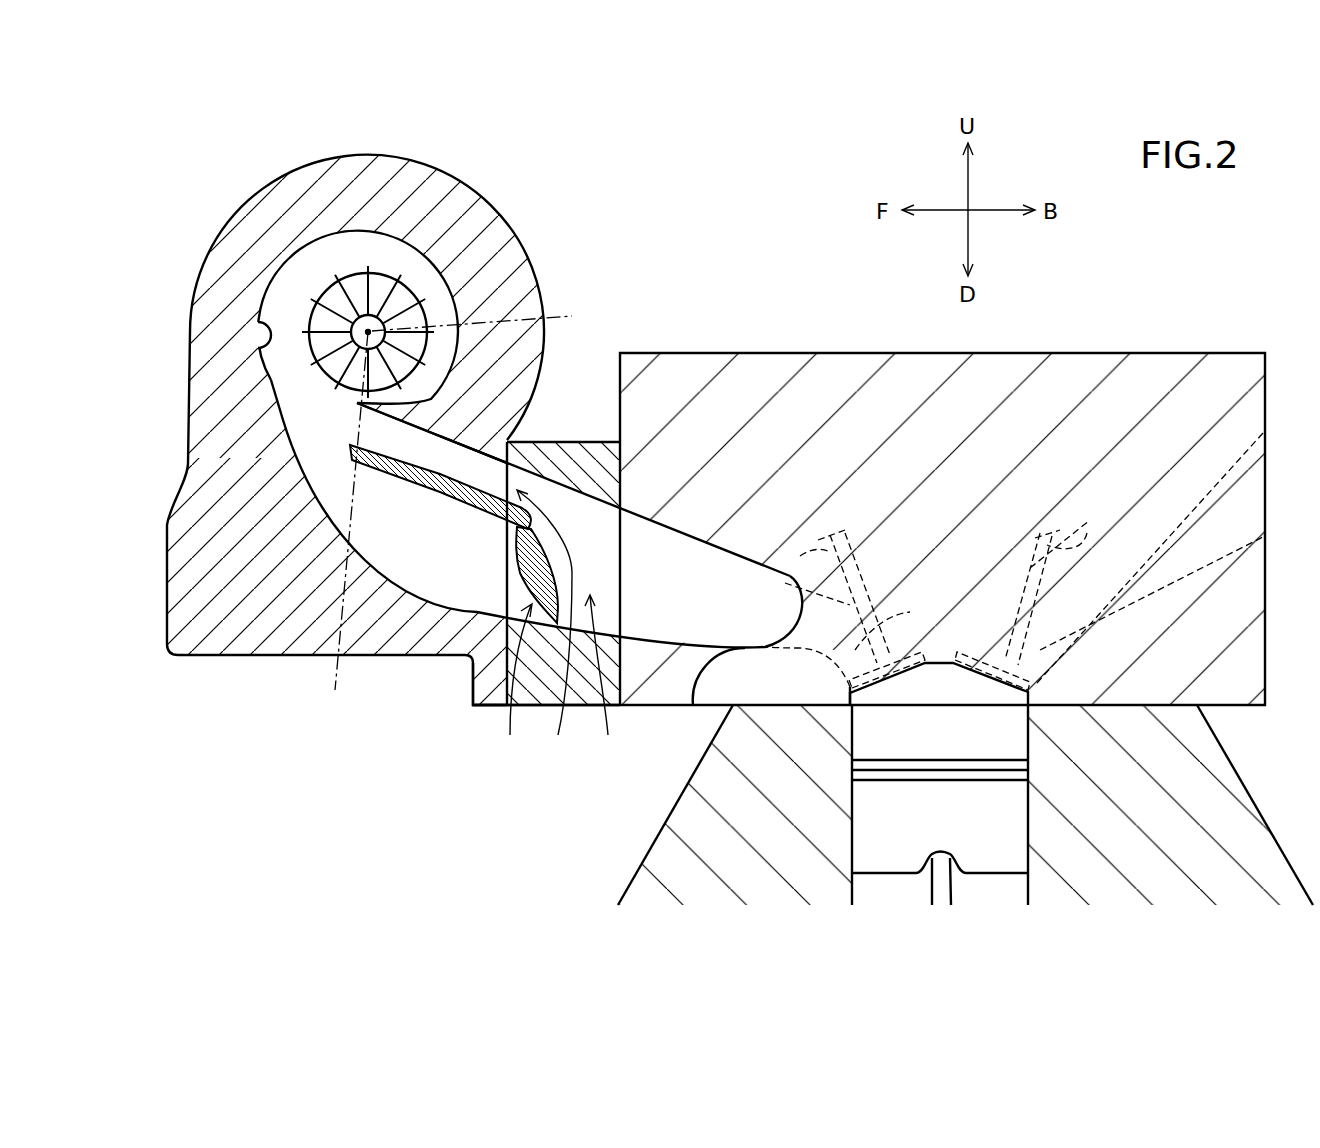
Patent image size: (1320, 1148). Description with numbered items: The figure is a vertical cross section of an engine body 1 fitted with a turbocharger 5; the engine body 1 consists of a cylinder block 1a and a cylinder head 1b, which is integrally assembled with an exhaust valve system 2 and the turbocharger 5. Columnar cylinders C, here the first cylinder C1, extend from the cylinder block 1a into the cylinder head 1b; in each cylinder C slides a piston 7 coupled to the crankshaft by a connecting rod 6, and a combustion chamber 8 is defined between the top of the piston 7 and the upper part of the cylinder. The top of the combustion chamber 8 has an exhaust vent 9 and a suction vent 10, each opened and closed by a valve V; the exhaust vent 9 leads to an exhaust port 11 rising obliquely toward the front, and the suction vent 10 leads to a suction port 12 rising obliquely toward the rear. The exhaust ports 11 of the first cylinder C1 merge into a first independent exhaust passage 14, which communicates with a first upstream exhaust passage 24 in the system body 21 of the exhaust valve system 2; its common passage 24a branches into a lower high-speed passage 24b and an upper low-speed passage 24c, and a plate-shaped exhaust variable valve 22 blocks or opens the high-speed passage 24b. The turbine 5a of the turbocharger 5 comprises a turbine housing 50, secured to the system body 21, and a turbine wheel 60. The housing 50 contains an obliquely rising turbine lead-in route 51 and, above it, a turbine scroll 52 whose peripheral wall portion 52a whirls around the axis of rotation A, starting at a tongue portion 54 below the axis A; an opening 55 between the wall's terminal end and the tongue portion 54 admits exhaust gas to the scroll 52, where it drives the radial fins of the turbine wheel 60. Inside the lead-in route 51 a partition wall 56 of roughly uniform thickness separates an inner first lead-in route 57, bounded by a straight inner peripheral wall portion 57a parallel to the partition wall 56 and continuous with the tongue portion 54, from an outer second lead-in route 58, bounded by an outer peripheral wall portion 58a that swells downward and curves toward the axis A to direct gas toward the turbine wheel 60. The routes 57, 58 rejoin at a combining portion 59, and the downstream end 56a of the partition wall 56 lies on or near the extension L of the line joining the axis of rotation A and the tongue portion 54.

The engine body 1 is at (1229, 278).
The cylinder block 1a is at (1226, 750).
The cylinder head 1b is at (1102, 353).
The exhaust valve system 2 is at (600, 429).
The turbocharger 5 is at (449, 433).
The turbine 5a is at (230, 161).
The connecting rod 6 is at (932, 893).
The piston 7 is at (862, 830).
The combustion chamber 8 is at (946, 739).
The exhaust vent 9 is at (893, 640).
The suction vent 10 is at (990, 645).
The exhaust port 11 is at (822, 640).
The suction port 12 is at (1110, 588).
The first independent exhaust passage 14 is at (730, 614).
The system body 21 is at (567, 440).
The exhaust variable valve 22 is at (518, 562).
The first upstream exhaust passage 24 is at (557, 646).
The common passage 24a is at (612, 680).
The high-speed passage 24b is at (505, 685).
The low-speed passage 24c is at (549, 628).
The turbine housing 50 is at (243, 656).
The turbine lead-in route 51 is at (468, 714).
The turbine scroll 52 is at (277, 292).
The peripheral wall portion 52a is at (260, 330).
The tongue portion 54 is at (356, 402).
The opening 55 is at (315, 403).
The partition wall 56 is at (389, 478).
The downstream end 56a is at (305, 499).
The first lead-in route 57 is at (447, 471).
The inner peripheral wall portion 57a is at (447, 458).
The second lead-in route 58 is at (408, 533).
The outer peripheral wall portion 58a is at (330, 512).
The combining portion 59 is at (319, 443).
The turbine wheel 60 is at (380, 287).
The axis of rotation A is at (483, 315).
The extension L is at (348, 525).
The valve V is at (936, 542).
The cylinder C is at (1011, 805).
The first cylinder C1 is at (1047, 820).